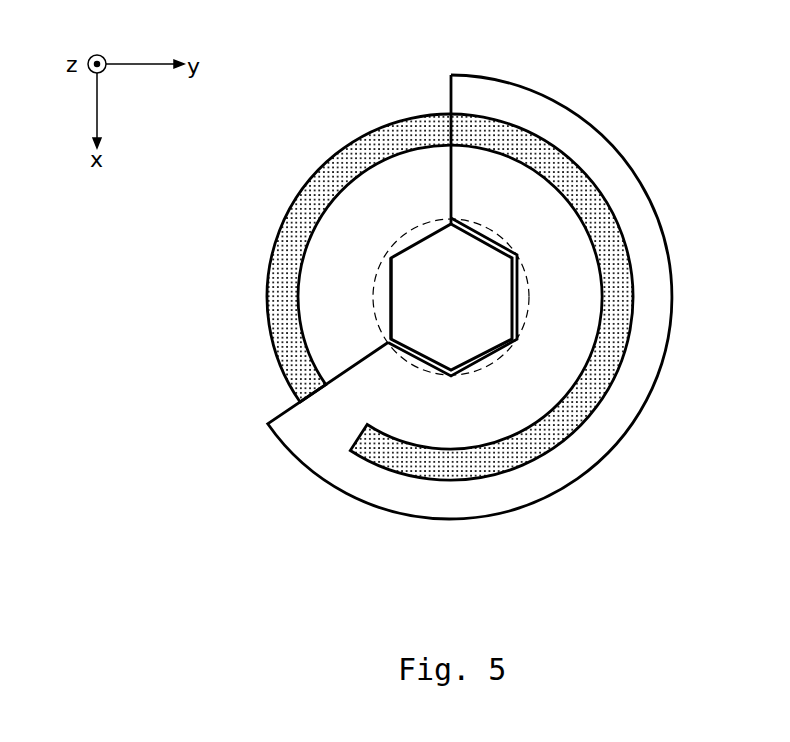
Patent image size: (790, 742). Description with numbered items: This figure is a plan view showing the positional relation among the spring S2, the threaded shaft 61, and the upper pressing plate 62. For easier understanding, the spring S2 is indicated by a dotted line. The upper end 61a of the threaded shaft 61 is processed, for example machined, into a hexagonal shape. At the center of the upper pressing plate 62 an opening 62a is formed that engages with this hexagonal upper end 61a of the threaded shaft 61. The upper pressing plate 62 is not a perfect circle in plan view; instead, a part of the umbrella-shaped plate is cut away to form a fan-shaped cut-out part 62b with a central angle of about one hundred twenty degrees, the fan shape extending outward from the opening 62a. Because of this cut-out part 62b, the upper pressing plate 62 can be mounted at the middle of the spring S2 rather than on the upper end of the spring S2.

The upper pressing plate 62 is at (590, 138).
The opening 62a is at (512, 302).
The fan-shaped cut-out part 62b is at (449, 99).
The threaded shaft 61 is at (417, 237).
The upper end of the threaded shaft 61a is at (397, 298).
The spring S2 is at (290, 228).